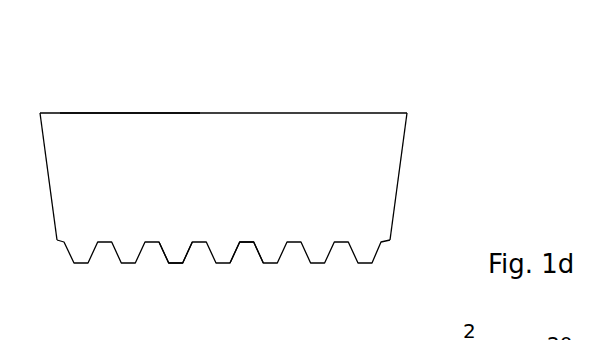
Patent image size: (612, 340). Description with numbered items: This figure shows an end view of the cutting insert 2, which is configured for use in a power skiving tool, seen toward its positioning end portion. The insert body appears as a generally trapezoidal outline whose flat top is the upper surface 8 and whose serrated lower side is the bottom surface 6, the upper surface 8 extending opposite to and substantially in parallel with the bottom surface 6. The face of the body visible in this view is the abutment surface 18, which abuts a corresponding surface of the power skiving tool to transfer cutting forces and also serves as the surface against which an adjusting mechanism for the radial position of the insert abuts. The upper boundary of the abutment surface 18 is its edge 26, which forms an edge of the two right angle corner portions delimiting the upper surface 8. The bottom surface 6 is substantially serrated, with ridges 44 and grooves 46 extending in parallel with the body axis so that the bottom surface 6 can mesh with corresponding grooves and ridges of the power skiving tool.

The cutting insert 2 is at (233, 177).
The bottom surface 6 is at (128, 263).
The upper surface 8 is at (118, 112).
The abutment surface 18 is at (211, 190).
The edge 26 is at (355, 113).
The ridge 44 is at (172, 262).
The groove 46 is at (245, 243).